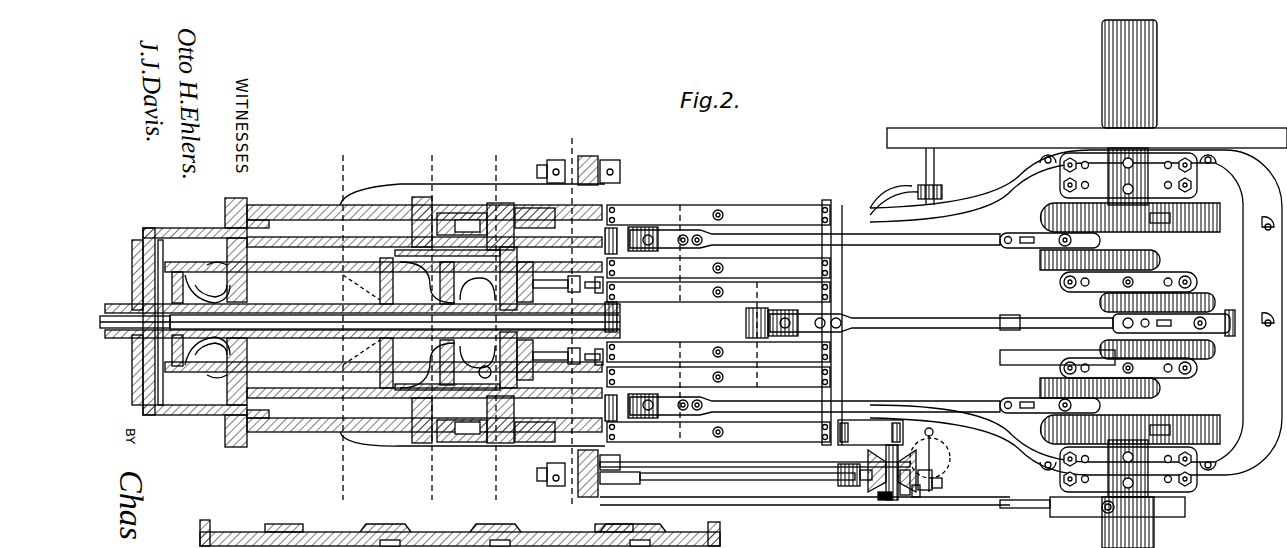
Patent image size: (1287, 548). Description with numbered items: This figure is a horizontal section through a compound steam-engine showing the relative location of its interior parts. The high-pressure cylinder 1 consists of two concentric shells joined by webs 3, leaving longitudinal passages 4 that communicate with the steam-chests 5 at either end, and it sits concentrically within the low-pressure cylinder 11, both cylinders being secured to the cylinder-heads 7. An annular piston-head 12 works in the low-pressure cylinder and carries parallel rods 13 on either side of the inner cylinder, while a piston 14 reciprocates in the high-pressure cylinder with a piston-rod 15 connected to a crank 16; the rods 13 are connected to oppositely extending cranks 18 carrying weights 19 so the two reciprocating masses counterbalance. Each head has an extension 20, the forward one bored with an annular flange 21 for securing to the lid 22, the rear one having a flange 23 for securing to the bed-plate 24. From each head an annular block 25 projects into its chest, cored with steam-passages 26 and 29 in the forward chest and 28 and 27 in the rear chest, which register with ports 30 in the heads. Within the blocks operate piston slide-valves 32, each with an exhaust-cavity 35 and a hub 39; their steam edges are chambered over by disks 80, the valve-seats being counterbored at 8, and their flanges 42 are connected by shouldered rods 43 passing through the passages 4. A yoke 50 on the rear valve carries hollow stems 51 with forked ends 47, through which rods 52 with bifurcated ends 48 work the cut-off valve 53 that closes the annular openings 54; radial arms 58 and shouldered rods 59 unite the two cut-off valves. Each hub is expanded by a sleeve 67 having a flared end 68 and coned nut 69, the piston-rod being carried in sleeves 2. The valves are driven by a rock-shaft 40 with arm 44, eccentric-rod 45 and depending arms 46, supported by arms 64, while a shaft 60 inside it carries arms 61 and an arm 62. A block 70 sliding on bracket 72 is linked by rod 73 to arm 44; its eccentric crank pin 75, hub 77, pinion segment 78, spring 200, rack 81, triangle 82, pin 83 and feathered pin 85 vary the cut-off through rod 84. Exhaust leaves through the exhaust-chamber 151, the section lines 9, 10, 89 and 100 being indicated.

The high-pressure cylinder 1 is at (304, 297).
The sleeves 2 is at (362, 321).
The webs 3 is at (288, 280).
The longitudinal passages 4 is at (306, 357).
The steam-chests 5 is at (160, 385).
The cylinder-heads 7 is at (243, 200).
The counterbore 8 is at (501, 321).
The section line 9 is at (432, 320).
The section line 10 is at (342, 320).
The low-pressure cylinder 11 is at (424, 318).
The annular piston-head 12 is at (262, 222).
The parallel rods 13 is at (313, 240).
The piston 14 is at (380, 294).
The piston-rod 15 is at (395, 322).
The crank 16 is at (1110, 300).
The cranks 18 is at (1133, 218).
The weights 19 is at (1190, 218).
The extension 20 is at (210, 228).
The annular flange 21 is at (143, 240).
The lid 22 is at (158, 262).
The flange 23 is at (492, 205).
The bed-plate 24 is at (530, 208).
The annular block 25 is at (185, 240).
The steam-passage 26 is at (225, 280).
The steam-passage 27 is at (445, 230).
The steam-passage 28 is at (410, 255).
The steam-passage 29 is at (205, 270).
The ports 30 is at (235, 285).
The piston slide-valves 32 is at (168, 292).
The exhaust-cavity 35 is at (135, 240).
The sleeve or hub 39 is at (477, 323).
The rock-shaft 40 is at (338, 539).
The flange 42 is at (172, 372).
The shouldered rods 43 is at (310, 372).
The arm 44 is at (598, 482).
The eccentric-rod 45 is at (698, 480).
The depending arms 46 is at (599, 335).
The forked ends 47 is at (575, 372).
The bifurcated ends 48 is at (612, 275).
The yoke or saddle 50 is at (527, 403).
The hollow stems 51 is at (550, 285).
The rods 52 is at (560, 365).
The cut-off valve 53 is at (172, 278).
The annular openings 54 is at (565, 335).
The radial arms 58 is at (510, 317).
The shouldered rods 59 is at (305, 270).
The shaft 60 is at (233, 537).
The depending arms 61 is at (612, 296).
The arm 62 is at (575, 478).
The arms 64 is at (635, 461).
The sleeve 67 is at (235, 334).
The flared end 68 is at (230, 304).
The coned nut 69 is at (150, 345).
The block or frame 70 is at (850, 480).
The bracket 72 is at (870, 432).
The rod 73 is at (772, 480).
The pin 75 is at (935, 448).
The hub 77 is at (940, 462).
The pinion or segment of a pinion 78 is at (888, 475).
The disks 80 is at (235, 344).
The rack 81 is at (903, 495).
The isosceles triangle 82 is at (940, 486).
The pin 83 is at (916, 495).
The rod 84 is at (727, 468).
The square or feathered pin 85 is at (942, 476).
The spring 89 is at (232, 296).
The crank arm 100 is at (1098, 512).
The exhaust-chamber 151 is at (462, 222).
The spring 200 is at (882, 490).